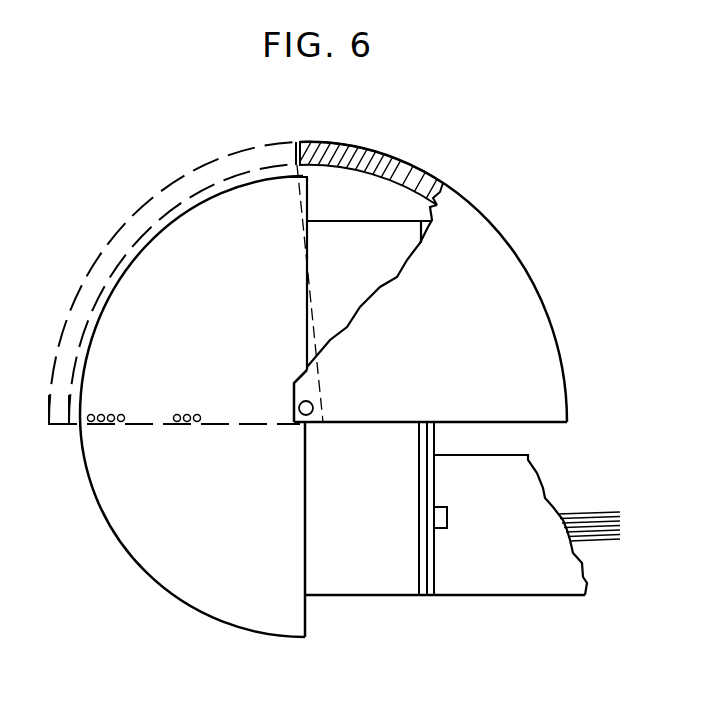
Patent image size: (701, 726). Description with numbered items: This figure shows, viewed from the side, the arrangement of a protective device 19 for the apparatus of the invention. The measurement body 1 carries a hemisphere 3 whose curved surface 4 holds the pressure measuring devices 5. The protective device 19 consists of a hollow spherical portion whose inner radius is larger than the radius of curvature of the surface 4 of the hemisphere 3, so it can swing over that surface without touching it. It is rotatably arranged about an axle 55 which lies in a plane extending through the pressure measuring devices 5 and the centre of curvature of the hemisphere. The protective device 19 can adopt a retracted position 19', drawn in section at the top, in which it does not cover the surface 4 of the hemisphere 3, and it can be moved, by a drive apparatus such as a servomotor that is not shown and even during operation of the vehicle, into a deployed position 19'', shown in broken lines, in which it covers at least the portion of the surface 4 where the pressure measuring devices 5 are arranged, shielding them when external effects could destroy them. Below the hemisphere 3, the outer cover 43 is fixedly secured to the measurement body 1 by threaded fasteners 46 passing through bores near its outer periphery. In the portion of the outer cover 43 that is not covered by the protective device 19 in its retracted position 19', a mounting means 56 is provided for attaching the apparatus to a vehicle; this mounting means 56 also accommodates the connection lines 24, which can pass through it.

The measurement body 1 is at (245, 622).
The hemisphere 3 is at (144, 573).
The surface of the hemisphere 4 is at (90, 470).
The pressure measuring devices 5 is at (120, 413).
The protective device 19 is at (451, 282).
The retracted position 19' is at (367, 184).
The deployed position 19'' is at (153, 283).
The connection lines 24 is at (597, 512).
The outer cover 43 is at (427, 597).
The threaded fasteners 46 is at (447, 518).
The axle 55 is at (311, 411).
The mounting means 56 is at (553, 590).